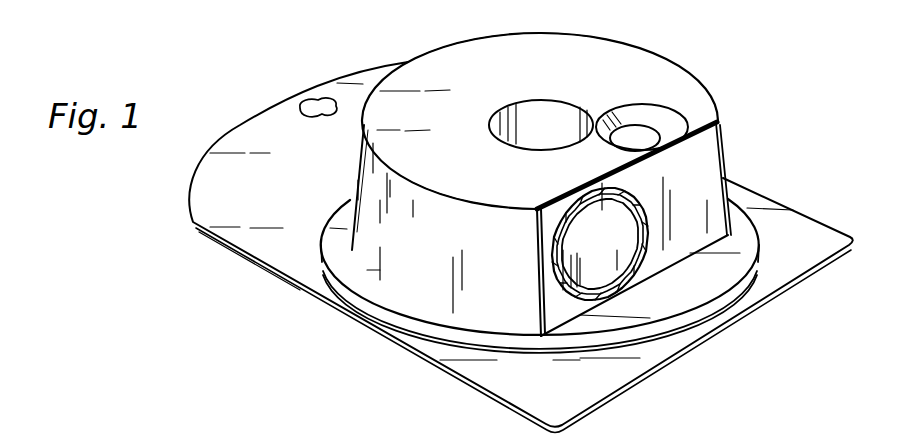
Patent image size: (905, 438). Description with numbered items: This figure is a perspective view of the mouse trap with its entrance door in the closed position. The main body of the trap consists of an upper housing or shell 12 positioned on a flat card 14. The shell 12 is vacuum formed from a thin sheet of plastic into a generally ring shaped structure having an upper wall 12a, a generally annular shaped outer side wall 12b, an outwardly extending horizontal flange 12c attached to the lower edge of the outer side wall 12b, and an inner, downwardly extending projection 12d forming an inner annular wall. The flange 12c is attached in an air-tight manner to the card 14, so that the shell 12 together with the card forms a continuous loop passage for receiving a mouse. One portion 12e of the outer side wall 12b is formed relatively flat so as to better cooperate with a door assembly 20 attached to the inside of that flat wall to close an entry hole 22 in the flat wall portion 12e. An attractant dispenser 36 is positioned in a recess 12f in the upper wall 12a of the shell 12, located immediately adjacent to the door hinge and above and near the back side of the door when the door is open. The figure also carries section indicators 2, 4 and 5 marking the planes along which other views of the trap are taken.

The upper housing or shell 12 is at (688, 77).
The upper wall 12a is at (592, 74).
The outer side wall 12b is at (403, 283).
The horizontal flange 12c is at (453, 336).
The inner downwardly extending projection 12d is at (527, 134).
The flat wall portion 12e is at (725, 234).
The recess 12f is at (676, 110).
The flat card 14 is at (227, 204).
The door assembly 20 is at (636, 273).
The entry hole 22 is at (568, 226).
The attractant dispenser 36 is at (638, 121).
The section line 2- 2 is at (502, 22).
The section line 4- 4 is at (344, 100).
The section line 5- 5 is at (563, 263).